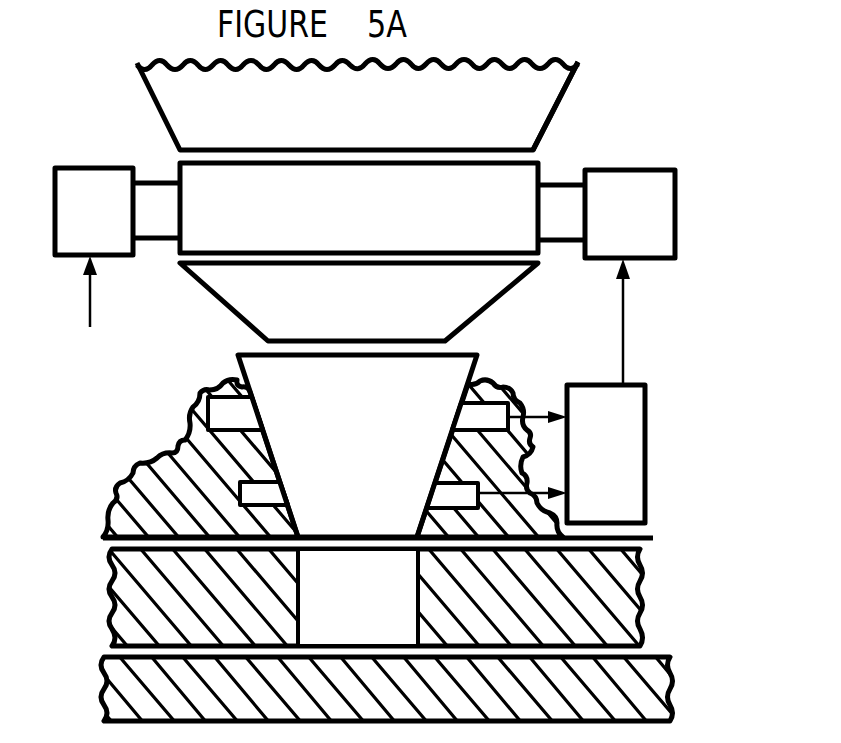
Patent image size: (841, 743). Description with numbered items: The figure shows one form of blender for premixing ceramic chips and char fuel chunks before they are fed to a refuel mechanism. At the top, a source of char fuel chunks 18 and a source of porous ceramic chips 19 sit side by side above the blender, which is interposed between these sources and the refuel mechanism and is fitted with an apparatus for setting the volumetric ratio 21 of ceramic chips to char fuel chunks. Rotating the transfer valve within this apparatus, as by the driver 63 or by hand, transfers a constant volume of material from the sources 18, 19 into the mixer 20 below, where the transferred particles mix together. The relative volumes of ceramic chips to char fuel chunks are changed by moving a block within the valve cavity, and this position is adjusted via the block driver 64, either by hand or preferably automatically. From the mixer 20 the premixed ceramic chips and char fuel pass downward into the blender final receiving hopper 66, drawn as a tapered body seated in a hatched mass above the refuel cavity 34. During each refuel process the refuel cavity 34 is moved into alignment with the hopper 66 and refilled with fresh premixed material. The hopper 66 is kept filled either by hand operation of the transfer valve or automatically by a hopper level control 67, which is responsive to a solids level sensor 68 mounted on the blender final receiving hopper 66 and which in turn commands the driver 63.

The source of char fuel chunks 18 is at (180, 108).
The source of porous ceramic chips 19 is at (518, 112).
The mixer 20 is at (248, 300).
The apparatus for setting the volumetric ratio of ceramic chips to char fuel chunks 21 is at (227, 225).
The refuel cavity 34 is at (375, 616).
The driver 63 is at (652, 222).
The block driver 64 is at (97, 190).
The blender final receiving hopper 66 is at (302, 455).
The hopper level control 67 is at (618, 443).
The solids level sensor 68 is at (218, 412).